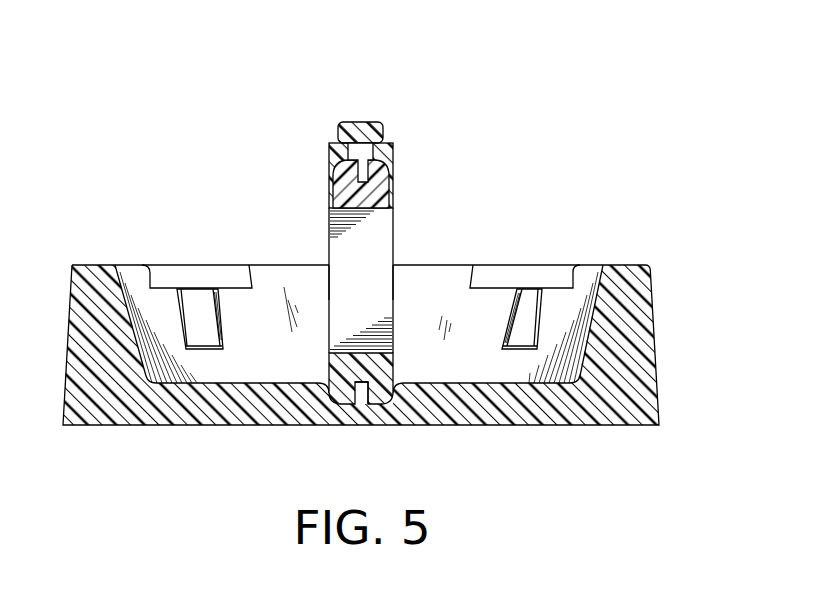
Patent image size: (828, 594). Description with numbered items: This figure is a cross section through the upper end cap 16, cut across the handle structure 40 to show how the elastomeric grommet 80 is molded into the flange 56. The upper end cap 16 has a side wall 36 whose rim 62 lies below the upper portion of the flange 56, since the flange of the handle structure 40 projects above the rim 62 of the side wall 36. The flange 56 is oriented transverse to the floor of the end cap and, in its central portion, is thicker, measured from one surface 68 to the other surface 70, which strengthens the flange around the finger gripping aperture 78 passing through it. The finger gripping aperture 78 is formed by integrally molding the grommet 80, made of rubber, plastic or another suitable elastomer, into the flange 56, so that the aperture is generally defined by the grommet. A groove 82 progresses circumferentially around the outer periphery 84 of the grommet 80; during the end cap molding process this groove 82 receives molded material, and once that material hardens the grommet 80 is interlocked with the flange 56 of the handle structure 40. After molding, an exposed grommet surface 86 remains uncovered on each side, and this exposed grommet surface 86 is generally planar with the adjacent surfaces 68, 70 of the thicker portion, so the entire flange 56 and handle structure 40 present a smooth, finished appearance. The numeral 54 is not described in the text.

The upper end cap 16 is at (194, 180).
The side wall 36 is at (646, 300).
The handle structure 40 is at (413, 118).
The base 54 is at (148, 425).
The flange 56 is at (394, 150).
The rim 62 is at (632, 265).
The surface 68 is at (329, 160).
The surface 70 is at (394, 164).
The finger gripping aperture 78 is at (384, 291).
The grommet 80 is at (394, 205).
The groove 82 is at (366, 426).
The outer periphery 84 is at (333, 398).
The exposed grommet surface 86 is at (394, 184).